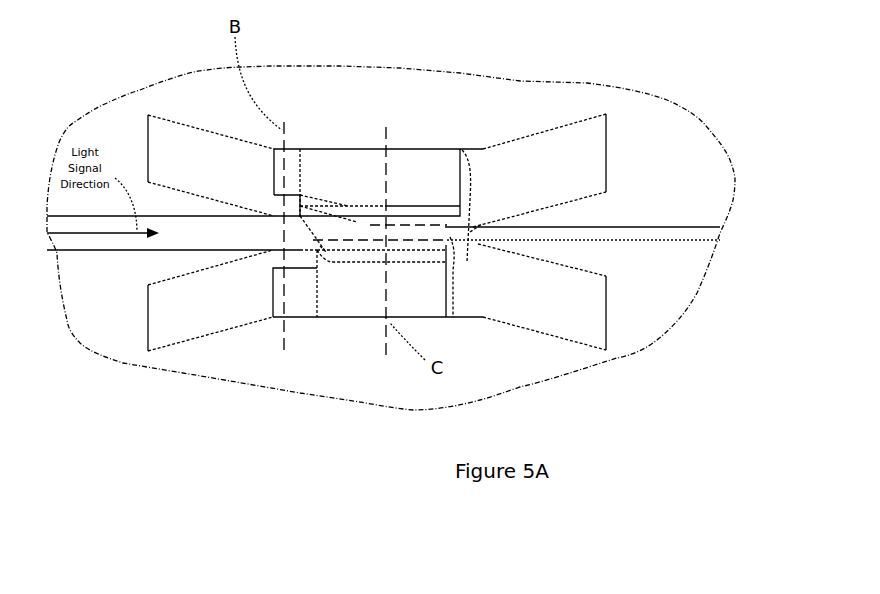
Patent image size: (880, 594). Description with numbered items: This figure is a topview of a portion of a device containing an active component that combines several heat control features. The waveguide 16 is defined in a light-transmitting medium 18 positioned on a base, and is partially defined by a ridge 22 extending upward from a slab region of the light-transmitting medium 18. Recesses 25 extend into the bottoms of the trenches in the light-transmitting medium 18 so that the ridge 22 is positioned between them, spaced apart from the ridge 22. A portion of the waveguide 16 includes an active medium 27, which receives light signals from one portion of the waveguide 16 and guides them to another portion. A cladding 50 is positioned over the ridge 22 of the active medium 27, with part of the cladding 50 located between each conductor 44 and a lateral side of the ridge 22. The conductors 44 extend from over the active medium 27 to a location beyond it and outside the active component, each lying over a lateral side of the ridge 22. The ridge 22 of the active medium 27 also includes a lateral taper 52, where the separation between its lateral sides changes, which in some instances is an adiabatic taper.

The waveguide 16 is at (652, 196).
The light-transmitting medium 18 is at (547, 150).
The ridge 22 is at (350, 222).
The recesses 25 is at (155, 112).
The active medium 27 is at (298, 138).
The conductors 44 is at (470, 175).
The cladding 50 is at (480, 225).
The lateral taper 52 is at (331, 263).